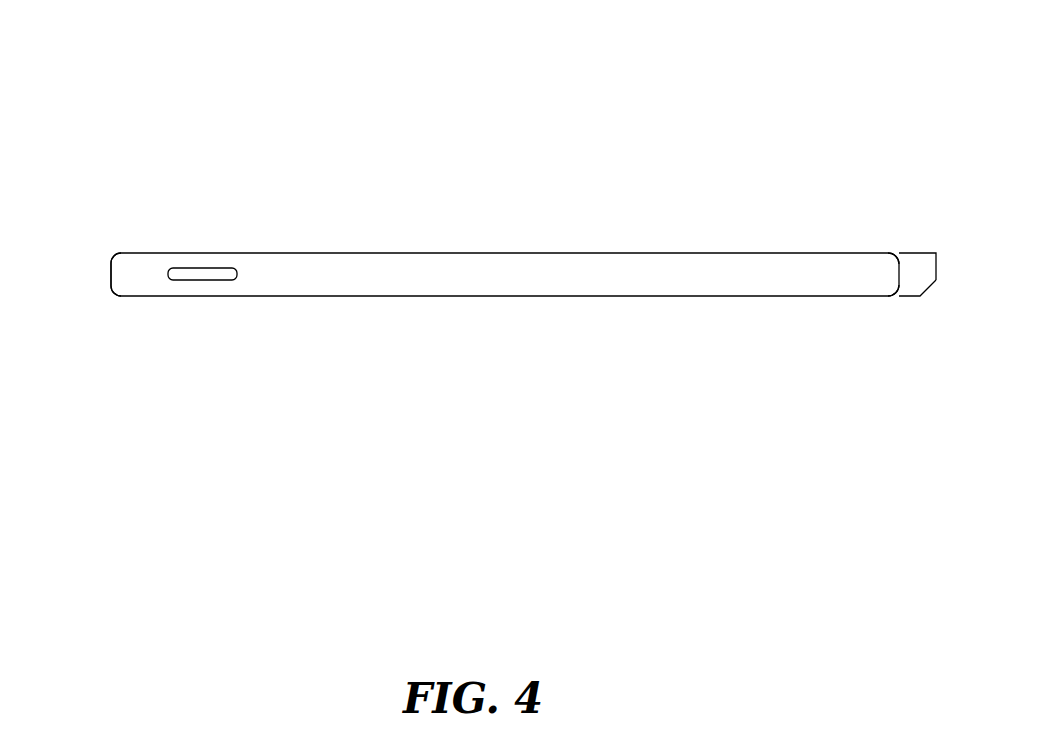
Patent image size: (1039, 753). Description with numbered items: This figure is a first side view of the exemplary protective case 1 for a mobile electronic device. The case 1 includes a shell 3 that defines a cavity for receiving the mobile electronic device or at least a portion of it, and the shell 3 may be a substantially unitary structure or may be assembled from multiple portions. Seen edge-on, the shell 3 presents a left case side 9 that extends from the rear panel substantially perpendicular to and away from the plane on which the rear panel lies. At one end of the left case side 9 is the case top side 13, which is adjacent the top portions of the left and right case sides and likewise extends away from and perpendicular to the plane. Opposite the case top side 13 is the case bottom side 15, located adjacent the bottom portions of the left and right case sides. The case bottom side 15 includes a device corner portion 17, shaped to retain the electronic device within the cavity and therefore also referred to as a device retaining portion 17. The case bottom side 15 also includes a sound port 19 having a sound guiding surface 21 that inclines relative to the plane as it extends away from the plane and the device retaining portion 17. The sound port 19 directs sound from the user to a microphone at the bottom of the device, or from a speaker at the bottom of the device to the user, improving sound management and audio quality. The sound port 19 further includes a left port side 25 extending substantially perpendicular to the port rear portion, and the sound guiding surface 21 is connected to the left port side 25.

The protective case 1 is at (840, 69).
The shell 3 is at (463, 283).
The left case side 9 is at (255, 277).
The case top side 13 is at (117, 277).
The case bottom side 15 is at (890, 265).
The device corner portion 17 is at (888, 280).
The sound port 19 is at (928, 314).
The sound guiding surface 21 is at (927, 290).
The left port side 25 is at (915, 262).